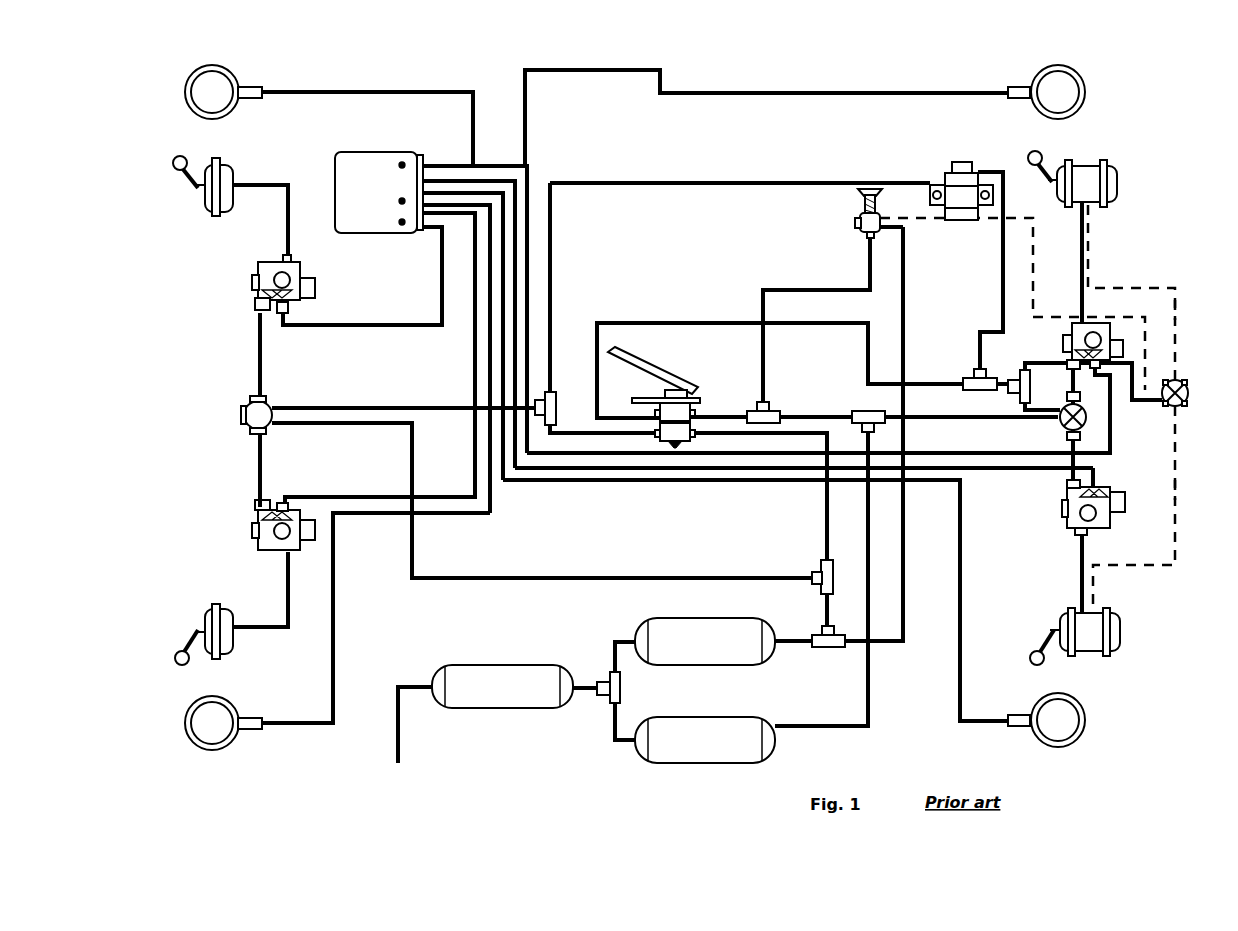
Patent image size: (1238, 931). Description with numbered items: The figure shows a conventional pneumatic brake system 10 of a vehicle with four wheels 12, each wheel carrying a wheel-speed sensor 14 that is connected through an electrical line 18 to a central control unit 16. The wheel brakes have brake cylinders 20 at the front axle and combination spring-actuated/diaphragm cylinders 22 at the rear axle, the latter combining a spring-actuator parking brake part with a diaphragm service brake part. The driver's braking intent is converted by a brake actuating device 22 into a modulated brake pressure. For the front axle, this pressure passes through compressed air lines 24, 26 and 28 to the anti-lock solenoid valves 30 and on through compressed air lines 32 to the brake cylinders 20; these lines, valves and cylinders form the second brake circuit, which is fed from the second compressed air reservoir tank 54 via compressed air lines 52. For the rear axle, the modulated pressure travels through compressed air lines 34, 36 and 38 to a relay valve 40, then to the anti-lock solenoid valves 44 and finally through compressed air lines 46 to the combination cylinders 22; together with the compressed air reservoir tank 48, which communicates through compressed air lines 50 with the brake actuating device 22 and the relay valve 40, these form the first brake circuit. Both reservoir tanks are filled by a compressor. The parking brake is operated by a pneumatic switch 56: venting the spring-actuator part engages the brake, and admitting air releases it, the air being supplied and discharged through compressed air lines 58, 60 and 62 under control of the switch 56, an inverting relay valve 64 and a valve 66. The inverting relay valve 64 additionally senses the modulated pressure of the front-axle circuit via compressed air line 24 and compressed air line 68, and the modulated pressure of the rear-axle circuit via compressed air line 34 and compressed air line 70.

The brake system 10 is at (824, 47).
The wheel 12 is at (212, 66).
The wheel-speed sensor 14 is at (250, 88).
The control unit 16 is at (370, 152).
The electrical line 18 is at (374, 92).
The brake cylinder 20 is at (236, 172).
The combination spring-actuated/diaphragm cylinder 22 is at (670, 380).
The compressed air line 24 is at (562, 430).
The compressed air line 26 is at (402, 408).
The compressed air line 28 is at (266, 344).
The solenoid valve 30 is at (250, 282).
The compressed air line 32 is at (290, 236).
The compressed air line 34 is at (630, 322).
The compressed air line 36 is at (996, 376).
The compressed air line 38 is at (1030, 404).
The relay valve 40 is at (1058, 426).
The solenoid valve 44 is at (1072, 530).
The compressed air line 46 is at (1078, 268).
The compressed air reservoir tank 48 is at (755, 760).
The compressed air line 50 is at (712, 416).
The compressed air line 52 is at (830, 518).
The second compressed air reservoir tank 54 is at (705, 618).
The pneumatic switch 56 is at (864, 238).
The compressed air line 58 is at (922, 226).
The compressed air line 60 is at (1040, 292).
The compressed air line 62 is at (1178, 334).
The inverting relay valve 64 is at (944, 170).
The valve 66 is at (1190, 400).
The compressed air line 68 is at (692, 183).
The compressed air line 70 is at (1000, 298).